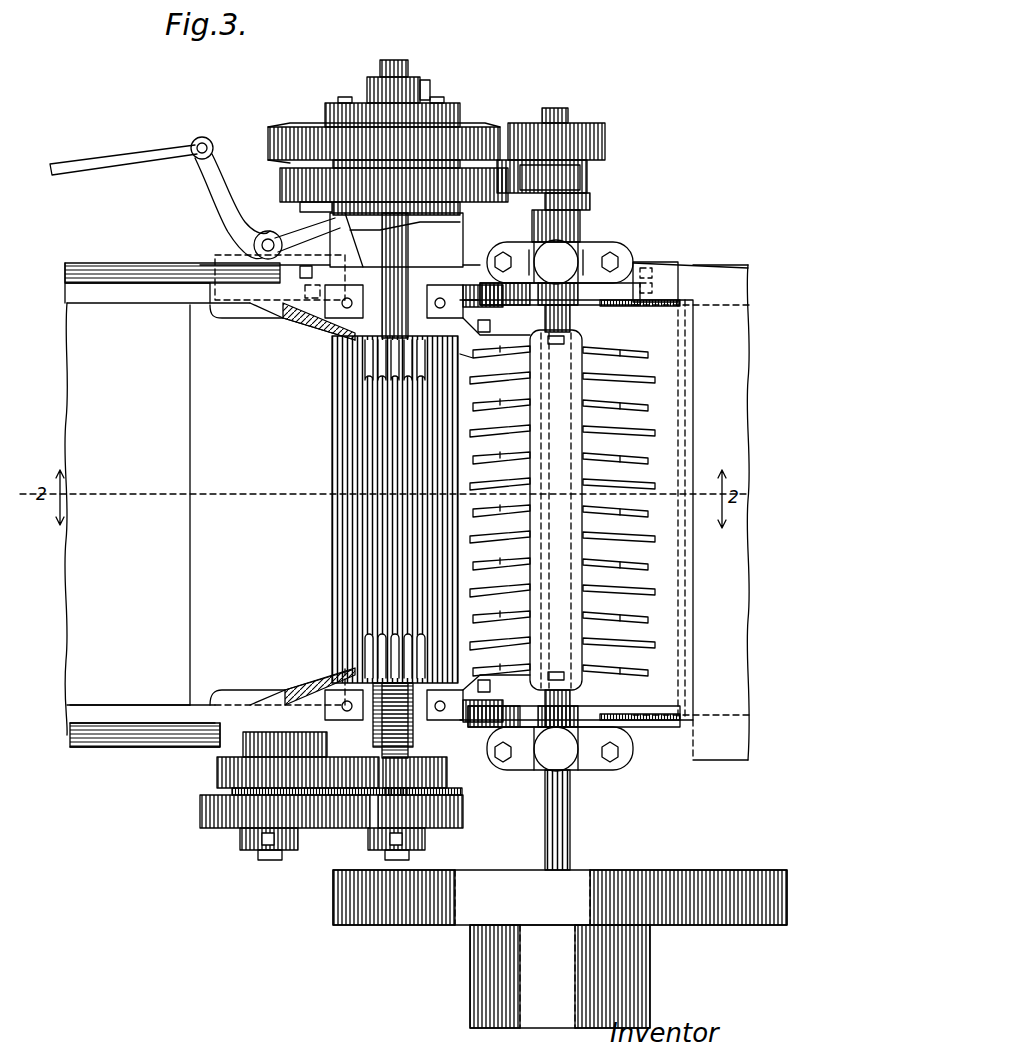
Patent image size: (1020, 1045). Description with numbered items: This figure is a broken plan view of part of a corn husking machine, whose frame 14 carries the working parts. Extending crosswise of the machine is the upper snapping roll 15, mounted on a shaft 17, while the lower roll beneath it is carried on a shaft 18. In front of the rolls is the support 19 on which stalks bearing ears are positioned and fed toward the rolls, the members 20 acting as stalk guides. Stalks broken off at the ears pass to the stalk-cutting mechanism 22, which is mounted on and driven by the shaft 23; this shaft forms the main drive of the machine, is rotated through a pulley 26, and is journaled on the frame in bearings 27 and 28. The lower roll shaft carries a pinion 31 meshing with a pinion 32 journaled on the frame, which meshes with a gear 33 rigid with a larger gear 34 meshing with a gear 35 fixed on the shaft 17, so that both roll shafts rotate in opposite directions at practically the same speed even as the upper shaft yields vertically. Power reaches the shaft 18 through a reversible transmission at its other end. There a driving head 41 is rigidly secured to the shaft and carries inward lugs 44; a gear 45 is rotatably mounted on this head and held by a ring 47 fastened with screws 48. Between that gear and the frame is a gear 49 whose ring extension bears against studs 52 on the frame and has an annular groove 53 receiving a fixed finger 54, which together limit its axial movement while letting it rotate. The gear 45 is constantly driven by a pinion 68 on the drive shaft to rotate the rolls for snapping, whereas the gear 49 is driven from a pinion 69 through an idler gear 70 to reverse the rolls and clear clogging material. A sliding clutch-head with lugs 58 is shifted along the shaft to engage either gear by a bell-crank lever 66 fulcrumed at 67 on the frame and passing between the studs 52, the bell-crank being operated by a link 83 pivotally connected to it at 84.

The frame 14 is at (98, 283).
The upper snapping roll 15 is at (395, 393).
The shaft 17 is at (382, 256).
The shaft 18 is at (402, 60).
The support 19 is at (157, 519).
The guide members 20 is at (345, 335).
The stalk-cutting mechanism 22 is at (620, 448).
The shaft 23 is at (560, 108).
The pulley 26 is at (648, 968).
The bearing 27 is at (590, 768).
The bearing 28 is at (585, 262).
The pinion 31 is at (450, 775).
The pinion 32 is at (345, 773).
The gear 33 is at (225, 773).
The gear 34 is at (215, 812).
The gear 35 is at (465, 811).
The driving head 41 is at (418, 80).
The lugs 44 is at (395, 165).
The gear 45 is at (300, 138).
The ring 47 is at (458, 106).
The screws 48 is at (395, 100).
The gear 49 is at (300, 183).
The studs 52 is at (395, 232).
The annular groove 53 is at (320, 215).
The finger 54 is at (307, 235).
The driving lugs 58 is at (320, 160).
The bell-crank lever 66 is at (220, 190).
The fulcrum 67 is at (255, 246).
The pinion 68 is at (598, 128).
The pinion 69 is at (585, 190).
The idler gear 70 is at (512, 175).
The link 83 is at (105, 163).
The pivot 84 is at (202, 142).